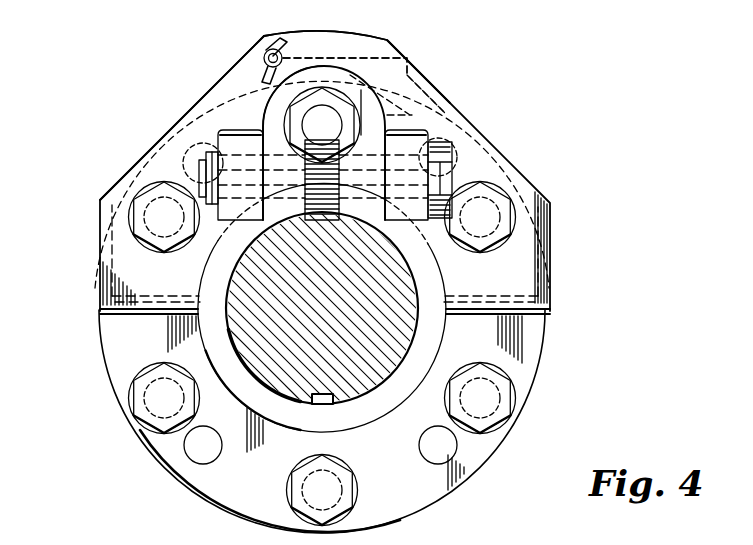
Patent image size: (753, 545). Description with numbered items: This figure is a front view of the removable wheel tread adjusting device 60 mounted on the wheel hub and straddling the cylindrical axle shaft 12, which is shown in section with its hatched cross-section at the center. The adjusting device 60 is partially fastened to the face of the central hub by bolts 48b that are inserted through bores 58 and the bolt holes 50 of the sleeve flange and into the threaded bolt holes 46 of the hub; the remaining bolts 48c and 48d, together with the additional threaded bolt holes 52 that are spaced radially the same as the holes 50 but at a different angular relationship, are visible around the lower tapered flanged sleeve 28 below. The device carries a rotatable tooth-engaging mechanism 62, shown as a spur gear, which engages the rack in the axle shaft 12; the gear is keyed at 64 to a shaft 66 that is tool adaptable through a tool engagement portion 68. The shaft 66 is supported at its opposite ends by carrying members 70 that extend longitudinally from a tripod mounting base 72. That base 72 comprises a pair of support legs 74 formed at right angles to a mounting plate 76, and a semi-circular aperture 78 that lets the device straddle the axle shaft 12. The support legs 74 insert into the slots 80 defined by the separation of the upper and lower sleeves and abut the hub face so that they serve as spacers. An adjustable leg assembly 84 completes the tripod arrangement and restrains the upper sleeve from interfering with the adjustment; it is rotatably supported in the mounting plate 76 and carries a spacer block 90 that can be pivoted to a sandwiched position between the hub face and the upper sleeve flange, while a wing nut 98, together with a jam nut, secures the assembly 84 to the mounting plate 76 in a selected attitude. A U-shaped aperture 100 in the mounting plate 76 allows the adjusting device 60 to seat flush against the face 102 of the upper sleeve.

The axle shaft 12 is at (360, 404).
The lower tapered flanged sleeve 28 is at (530, 406).
The threaded bolt holes 46 is at (512, 208).
The bolts 48b is at (132, 218).
The bolts 48c is at (137, 399).
The bolt 48d is at (290, 493).
The bolt holes 50 is at (387, 172).
The additional threaded bolt holes 52 is at (186, 148).
The bores 58 is at (387, 172).
The wheel tread adjusting device 60 is at (387, 172).
The tooth-engaging mechanism 62 is at (317, 220).
The key 64 is at (273, 220).
The shaft 66 is at (377, 220).
The tool engagement portion 68 is at (443, 160).
The carrying members 70 is at (222, 220).
The tripod mounting base 72 is at (246, 56).
The support legs 74 is at (128, 310).
The mounting plate 76 is at (380, 50).
The semi-circular aperture 78 is at (440, 335).
The slots 80 is at (90, 312).
The adjustable leg assembly 84 is at (365, 62).
The spacer block 90 is at (440, 77).
The wing nut 98 is at (283, 45).
The U-shaped aperture 100 is at (326, 80).
The face of the upper sleeve 102 is at (262, 120).